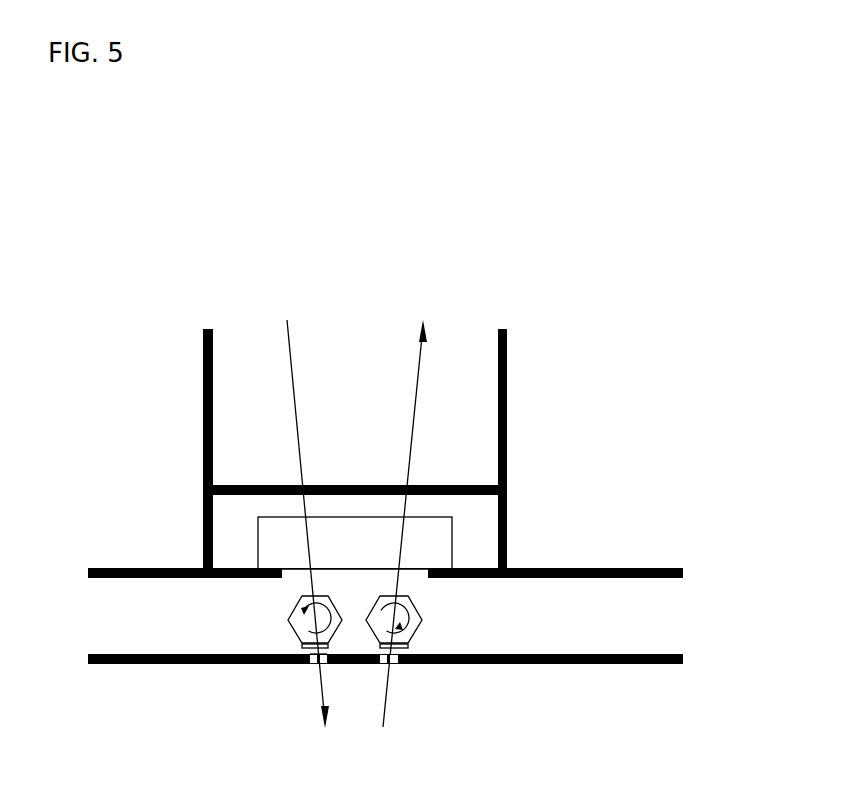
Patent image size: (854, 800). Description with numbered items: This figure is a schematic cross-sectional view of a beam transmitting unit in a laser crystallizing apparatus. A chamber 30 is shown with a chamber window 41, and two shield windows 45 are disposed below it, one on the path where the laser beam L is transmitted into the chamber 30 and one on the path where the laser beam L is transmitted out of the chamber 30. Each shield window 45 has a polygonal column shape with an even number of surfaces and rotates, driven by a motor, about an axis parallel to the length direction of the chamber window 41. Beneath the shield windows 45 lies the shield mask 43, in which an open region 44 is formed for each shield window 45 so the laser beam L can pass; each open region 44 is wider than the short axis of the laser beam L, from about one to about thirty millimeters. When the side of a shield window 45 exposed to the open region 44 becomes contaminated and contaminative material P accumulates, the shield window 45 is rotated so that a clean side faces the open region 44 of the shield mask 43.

The chamber 30 is at (683, 573).
The chamber window 41 is at (448, 537).
The shield mask 43 is at (683, 659).
The open region 44 is at (317, 665).
The shield window 45 is at (288, 620).
The laser beam L is at (348, 524).
The contaminative material P is at (295, 665).